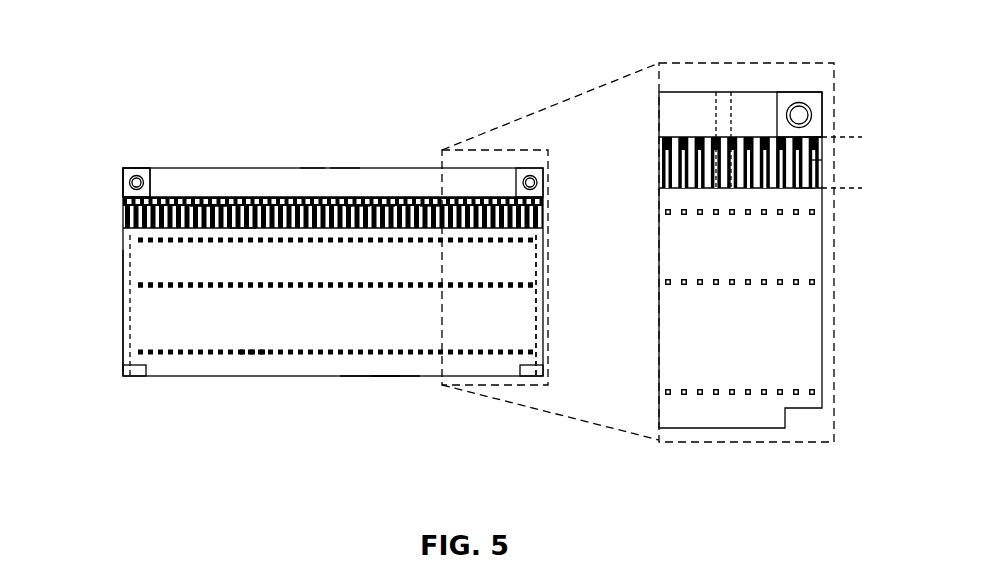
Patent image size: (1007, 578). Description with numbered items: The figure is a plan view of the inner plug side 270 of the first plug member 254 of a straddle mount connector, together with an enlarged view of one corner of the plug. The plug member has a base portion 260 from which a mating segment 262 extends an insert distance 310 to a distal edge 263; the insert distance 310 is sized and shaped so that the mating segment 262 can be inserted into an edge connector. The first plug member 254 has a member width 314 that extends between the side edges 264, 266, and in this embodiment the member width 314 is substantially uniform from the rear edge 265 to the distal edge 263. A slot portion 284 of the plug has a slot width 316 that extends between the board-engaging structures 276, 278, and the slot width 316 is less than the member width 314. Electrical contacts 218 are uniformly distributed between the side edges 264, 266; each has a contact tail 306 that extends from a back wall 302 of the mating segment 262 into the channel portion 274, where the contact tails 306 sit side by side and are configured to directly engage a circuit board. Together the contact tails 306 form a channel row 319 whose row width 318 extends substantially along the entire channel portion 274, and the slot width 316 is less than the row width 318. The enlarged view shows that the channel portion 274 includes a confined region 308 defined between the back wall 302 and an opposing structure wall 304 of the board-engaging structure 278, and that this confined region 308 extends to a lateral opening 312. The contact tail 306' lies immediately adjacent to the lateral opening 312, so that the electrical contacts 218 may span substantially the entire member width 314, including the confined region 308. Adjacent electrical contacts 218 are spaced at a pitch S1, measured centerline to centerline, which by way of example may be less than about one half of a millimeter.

The first plug member 254 is at (345, 90).
The electrical contacts 218 is at (178, 197).
The base portion 260 is at (123, 190).
The mating segment 262 is at (367, 330).
The distal edge 263 is at (387, 377).
The side edge 264 is at (123, 242).
The rear edge 265 is at (313, 168).
The side edge 266 is at (545, 256).
The inner plug side 270 is at (253, 338).
The channel portion 274 is at (430, 197).
The board-engaging structure 276 is at (150, 167).
The board-engaging structure 278 is at (530, 168).
The slot portion 284 is at (212, 195).
The back wall 302 is at (357, 197).
The structure wall 304 is at (804, 146).
The contact tails 306 is at (407, 154).
The contact tail 306' is at (858, 136).
The confined region 308 is at (815, 136).
The insert distance 310 is at (121, 250).
The lateral opening 312 is at (862, 137).
The member width 314 is at (543, 376).
The slot width 316 is at (517, 168).
The row width 318 is at (540, 290).
The channel row 319 is at (243, 230).
The pitch S1 is at (716, 86).